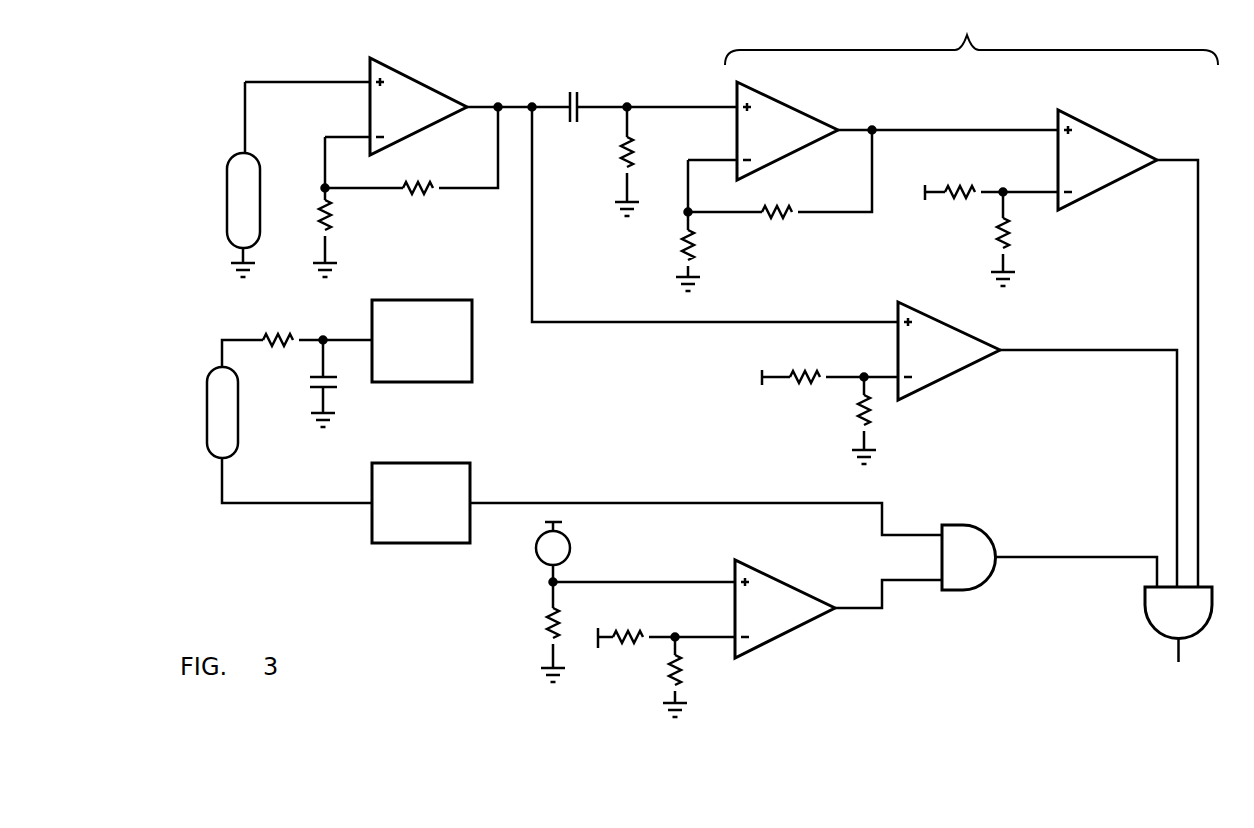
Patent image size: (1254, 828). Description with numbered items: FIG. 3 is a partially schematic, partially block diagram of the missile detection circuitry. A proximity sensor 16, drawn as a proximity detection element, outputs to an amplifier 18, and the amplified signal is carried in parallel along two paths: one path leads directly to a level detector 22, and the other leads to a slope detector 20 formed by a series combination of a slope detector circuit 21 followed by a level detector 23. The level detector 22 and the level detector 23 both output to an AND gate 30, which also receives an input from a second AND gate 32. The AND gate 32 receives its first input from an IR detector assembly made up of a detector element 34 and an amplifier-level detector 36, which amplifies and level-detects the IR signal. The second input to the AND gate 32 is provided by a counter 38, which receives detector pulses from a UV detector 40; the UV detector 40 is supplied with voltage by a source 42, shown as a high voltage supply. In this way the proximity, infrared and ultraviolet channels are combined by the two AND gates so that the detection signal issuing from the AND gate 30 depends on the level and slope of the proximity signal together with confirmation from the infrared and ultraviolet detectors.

The proximity sensor 16 is at (293, 190).
The amplifier 18 is at (442, 93).
The slope detector 20 is at (971, 37).
The slope detector circuit 21 is at (800, 108).
The level detector 22 is at (952, 325).
The level detector 23 is at (1112, 133).
The AND gate 30 is at (1145, 613).
The AND gate 32 is at (968, 525).
The detector element 34 is at (536, 549).
The amplifier-level detector 36 is at (783, 578).
The counter 38 is at (420, 463).
The UV detector 40 is at (275, 405).
The source 42 is at (512, 340).